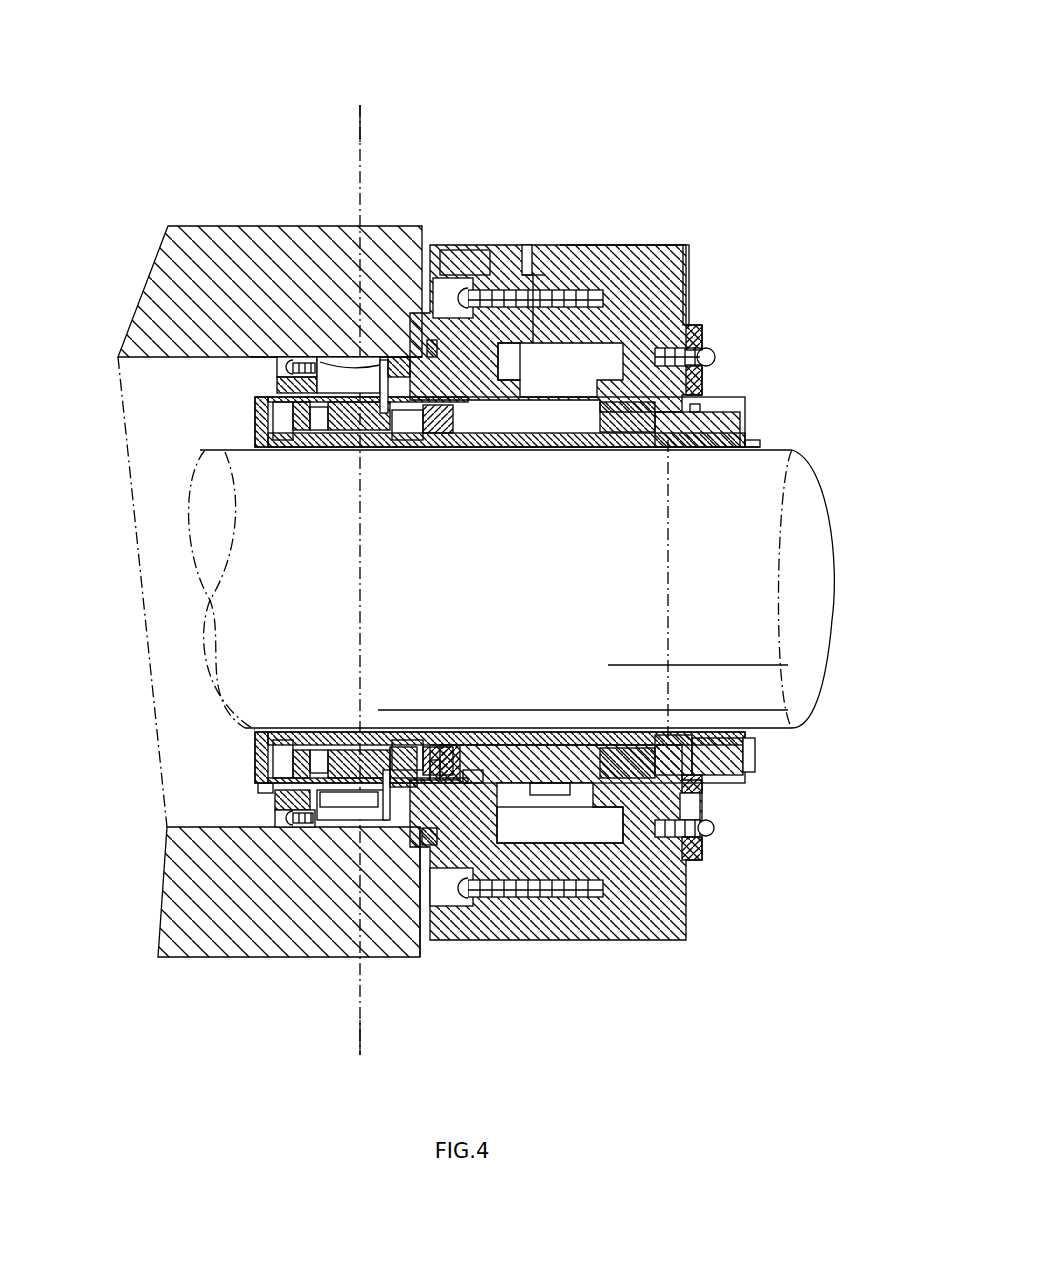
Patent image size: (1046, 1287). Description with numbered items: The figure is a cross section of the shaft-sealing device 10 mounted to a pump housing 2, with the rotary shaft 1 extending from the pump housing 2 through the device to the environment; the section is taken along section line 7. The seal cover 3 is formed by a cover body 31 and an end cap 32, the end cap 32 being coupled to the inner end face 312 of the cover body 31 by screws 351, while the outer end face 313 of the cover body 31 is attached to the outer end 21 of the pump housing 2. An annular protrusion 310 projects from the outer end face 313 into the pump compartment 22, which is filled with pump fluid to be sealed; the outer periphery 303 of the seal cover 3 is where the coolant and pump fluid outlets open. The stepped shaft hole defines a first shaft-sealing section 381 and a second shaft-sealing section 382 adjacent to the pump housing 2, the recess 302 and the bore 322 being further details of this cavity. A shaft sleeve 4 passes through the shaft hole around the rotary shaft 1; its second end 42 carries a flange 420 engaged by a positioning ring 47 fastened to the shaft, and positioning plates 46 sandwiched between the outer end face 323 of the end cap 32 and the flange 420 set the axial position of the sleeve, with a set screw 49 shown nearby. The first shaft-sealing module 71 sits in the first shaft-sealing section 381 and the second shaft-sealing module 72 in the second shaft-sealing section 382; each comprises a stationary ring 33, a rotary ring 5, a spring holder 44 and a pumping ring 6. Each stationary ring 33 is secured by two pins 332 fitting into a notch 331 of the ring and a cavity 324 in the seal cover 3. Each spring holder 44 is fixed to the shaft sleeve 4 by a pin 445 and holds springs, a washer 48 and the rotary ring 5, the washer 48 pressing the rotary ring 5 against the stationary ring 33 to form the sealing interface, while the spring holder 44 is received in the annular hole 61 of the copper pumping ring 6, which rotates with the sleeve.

The shaft-sealing device 10 is at (640, 130).
The rotary shaft 1 is at (772, 592).
The pump housing 2 is at (227, 238).
The outer end 21 is at (408, 935).
The pump compartment 22 is at (250, 362).
The seal cover 3 is at (652, 238).
The cover body 31 is at (488, 260).
The end cap 32 is at (620, 257).
The stationary ring 33 is at (407, 367).
The recess 302 is at (347, 356).
The outer periphery 303 is at (650, 940).
The annular protrusion 310 is at (640, 337).
The inner end face 312 is at (533, 273).
The outer end face 313 is at (427, 345).
The bore 322 is at (537, 263).
The outer end face 323 is at (687, 267).
The cavity 324 is at (473, 783).
The notch 331 is at (435, 772).
The pin 332 is at (445, 758).
The screw 351 is at (605, 297).
The first shaft-sealing section 381 is at (505, 360).
The second shaft-sealing section 382 is at (300, 360).
The shaft sleeve 4 is at (645, 447).
The second end 42 is at (699, 786).
The flange 420 is at (700, 777).
The spring holder 44 is at (262, 792).
The pin 445 is at (500, 762).
The positioning plate 46 is at (702, 858).
The positioning ring 47 is at (752, 751).
The washer 48 is at (560, 790).
The set screw 49 is at (710, 831).
The rotary ring 5 is at (615, 404).
The pumping ring 6 is at (263, 392).
The annular hole 61 is at (270, 788).
The section line 7 is at (345, 127).
The first shaft-sealing module 71 is at (590, 373).
The second shaft-sealing module 72 is at (383, 378).